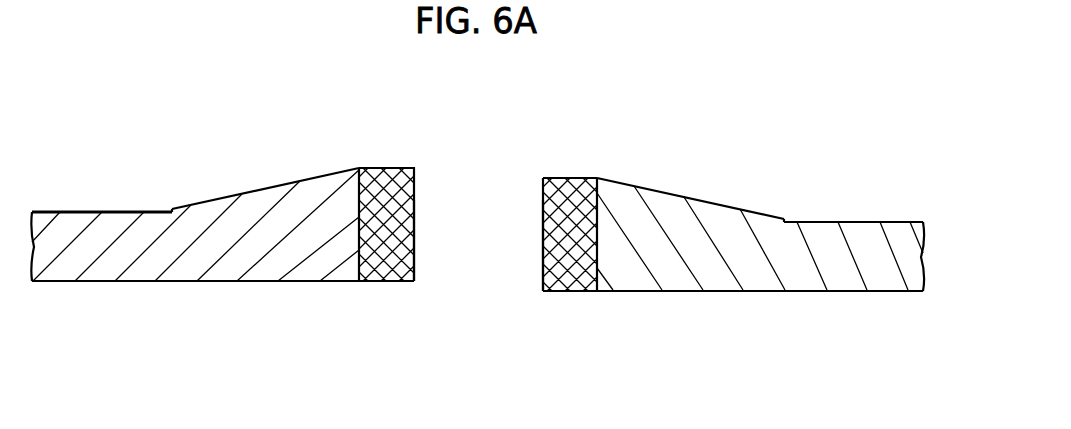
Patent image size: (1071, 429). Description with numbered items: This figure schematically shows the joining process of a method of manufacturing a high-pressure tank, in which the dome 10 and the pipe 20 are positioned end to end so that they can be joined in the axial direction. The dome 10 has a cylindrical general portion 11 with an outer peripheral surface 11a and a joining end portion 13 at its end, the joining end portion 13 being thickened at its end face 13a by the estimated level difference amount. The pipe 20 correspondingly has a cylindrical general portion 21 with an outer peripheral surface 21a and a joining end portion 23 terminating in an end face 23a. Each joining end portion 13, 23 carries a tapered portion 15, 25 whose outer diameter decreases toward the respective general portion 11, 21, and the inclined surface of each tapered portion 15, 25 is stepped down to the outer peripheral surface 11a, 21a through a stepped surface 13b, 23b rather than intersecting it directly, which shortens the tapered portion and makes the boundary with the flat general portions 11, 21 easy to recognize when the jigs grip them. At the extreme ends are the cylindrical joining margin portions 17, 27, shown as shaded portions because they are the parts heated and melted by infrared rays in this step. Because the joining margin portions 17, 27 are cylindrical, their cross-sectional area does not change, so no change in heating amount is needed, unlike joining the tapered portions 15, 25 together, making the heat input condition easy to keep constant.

The dome 10 is at (150, 168).
The general portion 11 is at (70, 258).
The outer peripheral surface 11a is at (50, 207).
The joining end portion 13 is at (282, 256).
The end face 13a is at (415, 242).
The stepped surface 13b is at (172, 205).
The tapered portion 15 is at (272, 199).
The joining margin portion 17 is at (387, 176).
The pipe 20 is at (804, 178).
The general portion 21 is at (880, 275).
The outer peripheral surface 21a is at (902, 218).
The joining end portion 23 is at (677, 257).
The end face 23a is at (540, 252).
The stepped surface 23b is at (786, 219).
The tapered portion 25 is at (675, 210).
The joining margin portion 27 is at (572, 180).